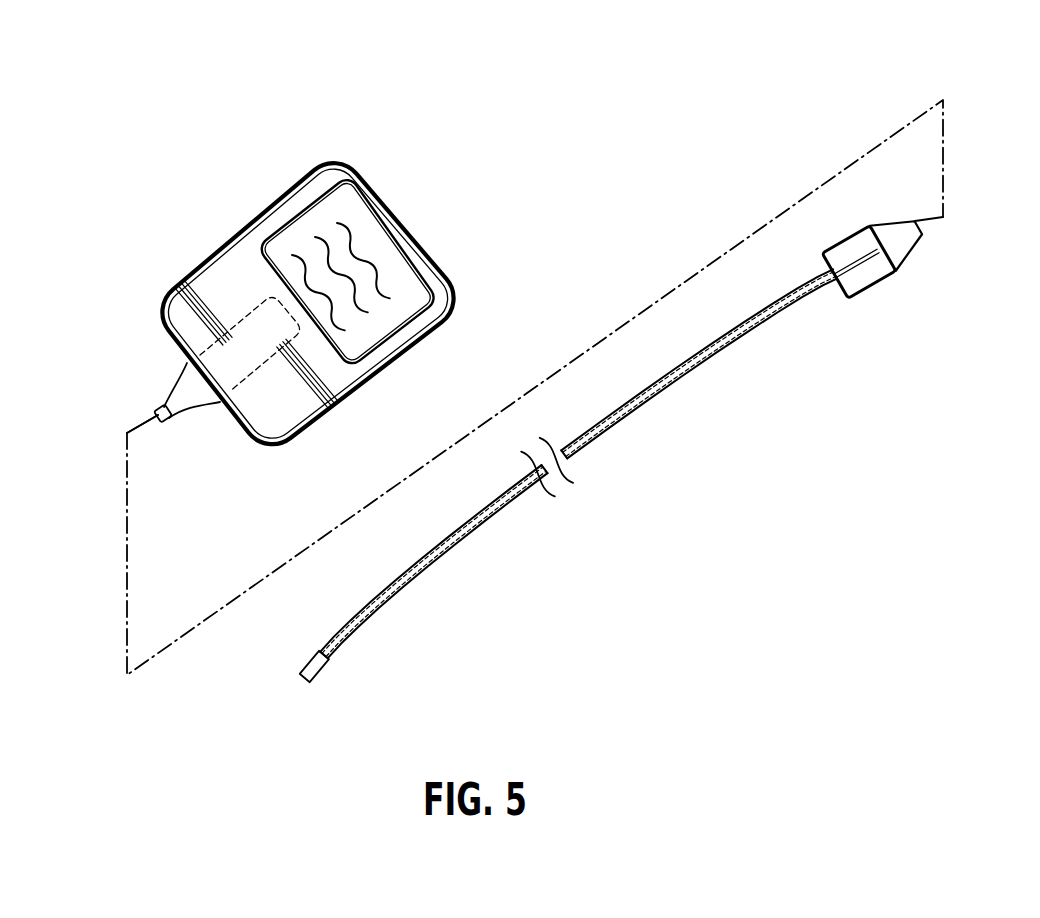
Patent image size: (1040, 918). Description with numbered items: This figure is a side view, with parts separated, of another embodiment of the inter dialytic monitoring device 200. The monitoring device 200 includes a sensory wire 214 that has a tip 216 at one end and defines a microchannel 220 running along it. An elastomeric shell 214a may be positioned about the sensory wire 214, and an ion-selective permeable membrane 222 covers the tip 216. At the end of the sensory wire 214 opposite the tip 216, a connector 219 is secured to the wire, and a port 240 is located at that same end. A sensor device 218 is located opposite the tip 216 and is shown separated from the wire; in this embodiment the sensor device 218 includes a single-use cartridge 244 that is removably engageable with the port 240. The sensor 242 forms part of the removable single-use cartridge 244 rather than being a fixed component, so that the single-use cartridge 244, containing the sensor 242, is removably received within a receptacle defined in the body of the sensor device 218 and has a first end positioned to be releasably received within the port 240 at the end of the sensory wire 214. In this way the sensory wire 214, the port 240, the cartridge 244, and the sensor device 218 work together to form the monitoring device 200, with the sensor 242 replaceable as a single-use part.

The monitoring device 200 is at (328, 60).
The sensory wire 214 is at (627, 414).
The elastomeric shell 214a is at (686, 378).
The tip 216 is at (314, 668).
The sensor device 218 is at (212, 237).
The connector 219 is at (868, 292).
The microchannel 220 is at (445, 553).
The ion-selective permeable membrane 222 is at (301, 677).
The port 240 is at (915, 250).
The sensor 242 is at (268, 306).
The single-use cartridge 244 is at (176, 386).